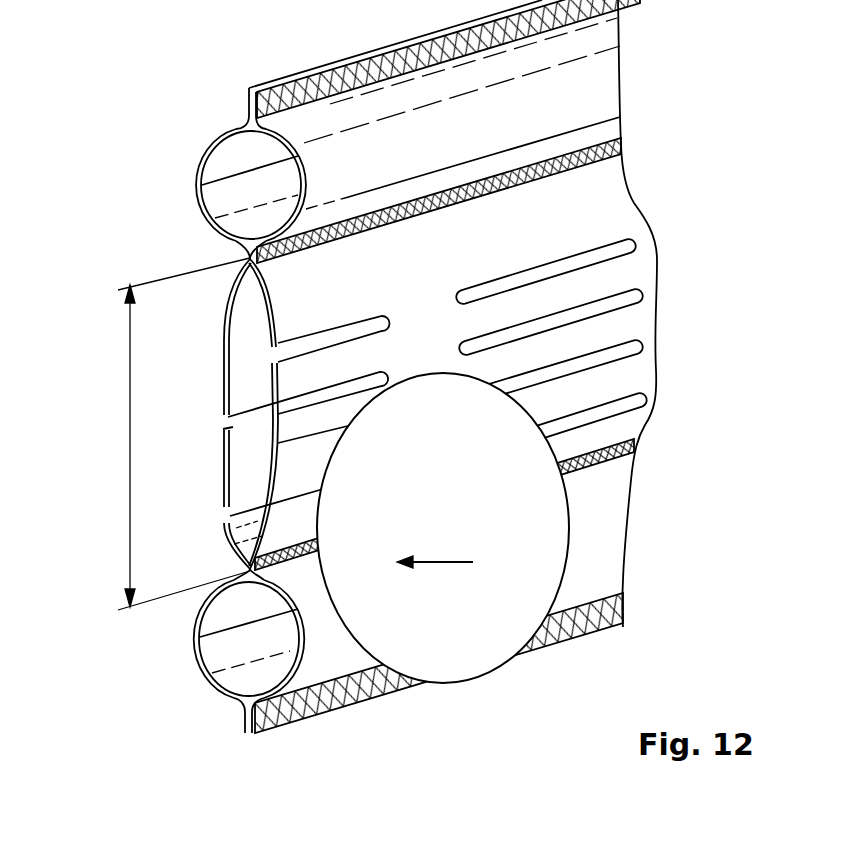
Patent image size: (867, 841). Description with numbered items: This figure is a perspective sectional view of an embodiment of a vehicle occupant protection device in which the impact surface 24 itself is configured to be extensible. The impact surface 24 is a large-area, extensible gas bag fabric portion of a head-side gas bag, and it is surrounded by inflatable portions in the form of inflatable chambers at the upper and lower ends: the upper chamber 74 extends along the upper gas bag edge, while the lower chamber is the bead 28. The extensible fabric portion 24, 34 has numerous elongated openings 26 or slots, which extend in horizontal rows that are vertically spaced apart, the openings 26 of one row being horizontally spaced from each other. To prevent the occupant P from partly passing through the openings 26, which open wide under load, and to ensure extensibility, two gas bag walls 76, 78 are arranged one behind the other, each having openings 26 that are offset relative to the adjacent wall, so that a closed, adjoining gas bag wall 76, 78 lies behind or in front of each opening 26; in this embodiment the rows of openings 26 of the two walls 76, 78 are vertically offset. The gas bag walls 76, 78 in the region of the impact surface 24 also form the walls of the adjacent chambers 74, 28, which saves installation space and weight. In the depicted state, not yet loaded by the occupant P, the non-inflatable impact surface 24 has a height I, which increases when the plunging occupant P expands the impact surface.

The upper chamber 74 is at (222, 212).
The gas bag wall 76 is at (262, 152).
The gas bag wall 78 is at (197, 185).
The openings 26 is at (632, 244).
The impact surface 24 is at (497, 416).
The panel face 34 is at (600, 282).
The bead 28 is at (612, 544).
The occupant P is at (462, 684).
The height I is at (128, 447).